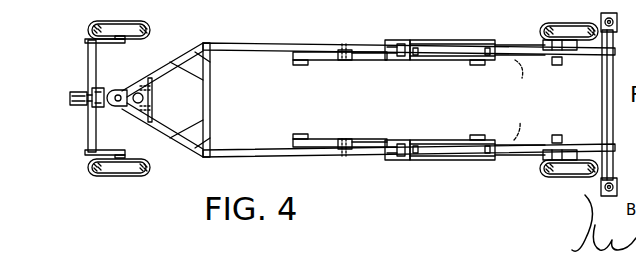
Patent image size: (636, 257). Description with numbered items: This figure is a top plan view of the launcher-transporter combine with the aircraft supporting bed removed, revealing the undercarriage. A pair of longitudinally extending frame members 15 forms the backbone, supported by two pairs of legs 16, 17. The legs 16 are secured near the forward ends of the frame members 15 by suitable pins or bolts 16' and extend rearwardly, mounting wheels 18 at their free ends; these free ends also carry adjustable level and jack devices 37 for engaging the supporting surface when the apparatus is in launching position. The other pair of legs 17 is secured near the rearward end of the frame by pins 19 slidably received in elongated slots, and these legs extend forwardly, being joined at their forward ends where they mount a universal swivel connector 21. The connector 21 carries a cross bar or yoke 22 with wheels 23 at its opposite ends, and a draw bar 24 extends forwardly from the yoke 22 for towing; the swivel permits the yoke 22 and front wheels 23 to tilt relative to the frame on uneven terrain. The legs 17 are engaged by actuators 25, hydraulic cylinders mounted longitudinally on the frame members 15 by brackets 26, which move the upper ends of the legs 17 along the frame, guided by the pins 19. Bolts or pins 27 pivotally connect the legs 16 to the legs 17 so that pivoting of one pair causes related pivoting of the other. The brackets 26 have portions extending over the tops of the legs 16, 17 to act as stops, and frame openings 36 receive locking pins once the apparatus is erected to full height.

The frame members 15 is at (363, 61).
The legs 16 is at (356, 115).
The pins or bolts 16' is at (341, 91).
The legs 17 is at (230, 44).
The wheels 18 is at (545, 31).
The pins 19 is at (557, 65).
The universal swivel connector 21 is at (109, 90).
The cross bar or yoke 22 is at (90, 50).
The wheels 23 is at (150, 30).
The draw bar 24 is at (78, 91).
The actuators 25 is at (440, 48).
The brackets 26 is at (394, 60).
The bolts or pins 27 is at (478, 139).
The frame openings 36 is at (520, 100).
The adjustable level and jack devices 37 is at (617, 22).